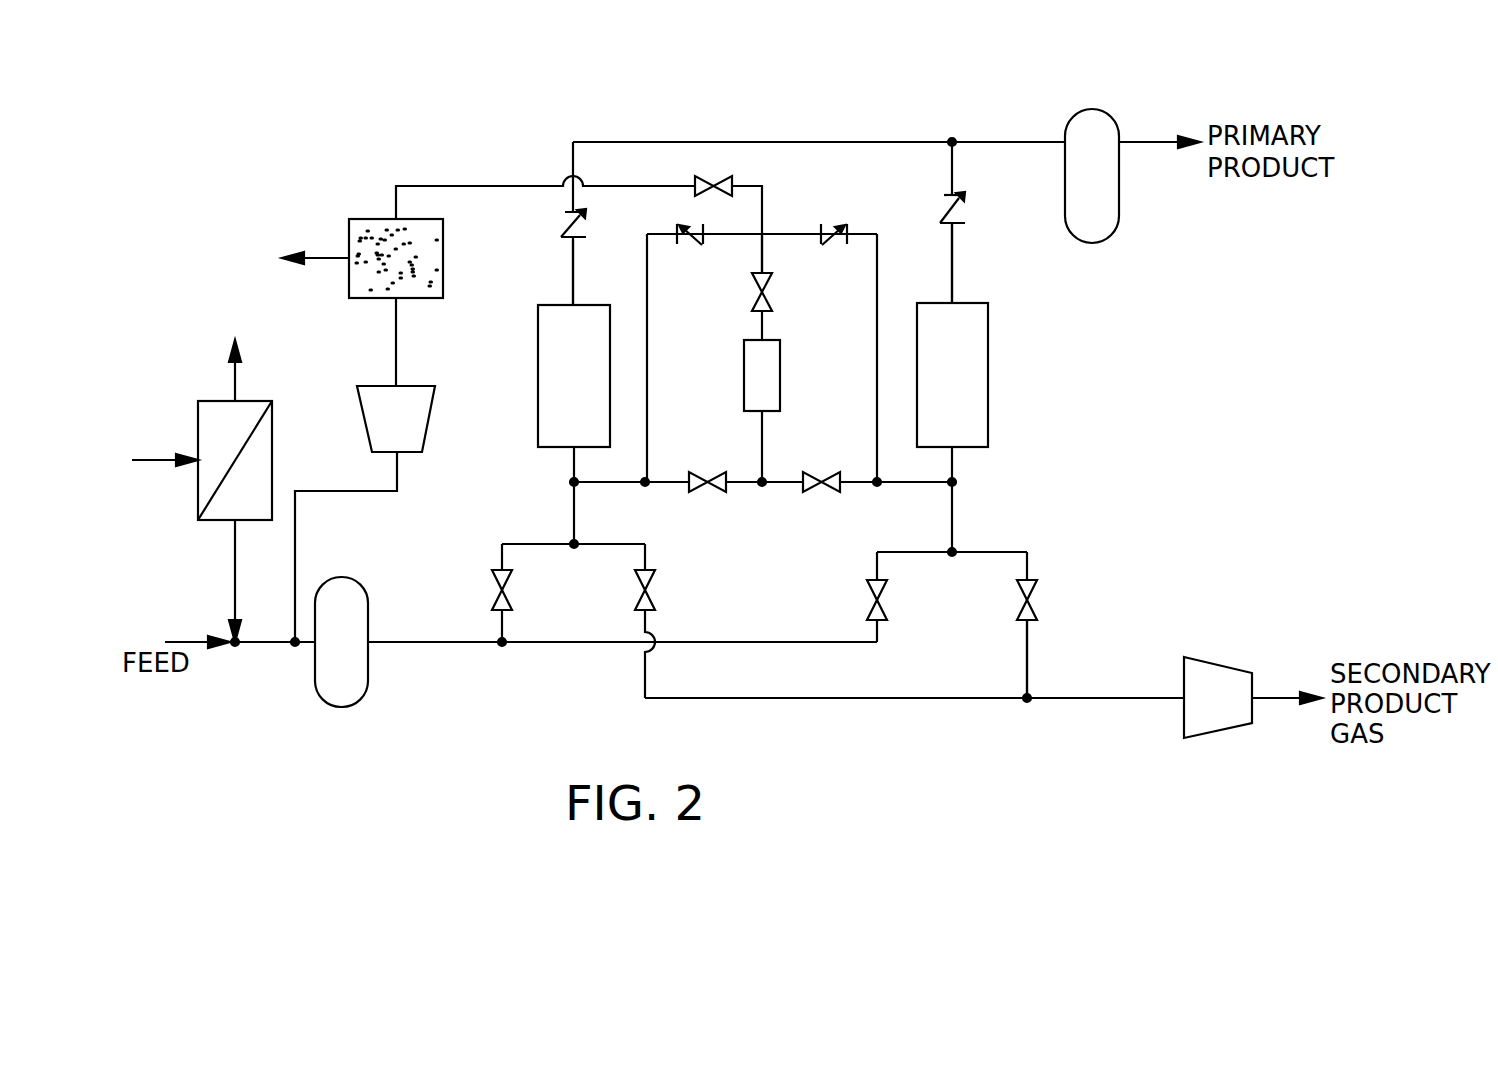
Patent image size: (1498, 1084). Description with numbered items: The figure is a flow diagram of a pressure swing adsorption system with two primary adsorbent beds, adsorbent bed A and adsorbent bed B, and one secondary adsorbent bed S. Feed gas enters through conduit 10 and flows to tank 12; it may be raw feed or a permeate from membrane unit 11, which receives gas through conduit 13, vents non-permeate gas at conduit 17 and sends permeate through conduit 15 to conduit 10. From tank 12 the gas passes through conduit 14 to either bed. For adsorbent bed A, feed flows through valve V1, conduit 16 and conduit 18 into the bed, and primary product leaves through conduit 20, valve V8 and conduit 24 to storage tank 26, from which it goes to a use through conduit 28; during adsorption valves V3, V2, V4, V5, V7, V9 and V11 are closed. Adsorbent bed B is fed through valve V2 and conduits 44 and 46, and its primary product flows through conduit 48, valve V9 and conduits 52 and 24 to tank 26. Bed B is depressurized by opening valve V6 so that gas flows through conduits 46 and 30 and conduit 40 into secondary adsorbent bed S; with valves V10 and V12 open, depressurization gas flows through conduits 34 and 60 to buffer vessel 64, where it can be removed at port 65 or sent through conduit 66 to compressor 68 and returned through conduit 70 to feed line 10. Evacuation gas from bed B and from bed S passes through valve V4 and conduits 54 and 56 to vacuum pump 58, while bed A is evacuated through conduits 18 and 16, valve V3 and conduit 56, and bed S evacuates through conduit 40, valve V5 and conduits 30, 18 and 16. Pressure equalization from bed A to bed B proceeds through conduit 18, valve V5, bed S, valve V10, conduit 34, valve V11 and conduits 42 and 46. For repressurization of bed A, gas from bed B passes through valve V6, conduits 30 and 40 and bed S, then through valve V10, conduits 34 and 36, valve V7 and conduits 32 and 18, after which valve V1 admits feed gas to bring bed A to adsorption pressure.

The conduit 10 is at (265, 648).
The membrane unit 11 is at (203, 432).
The tank 12 is at (368, 676).
The conduit 13 is at (153, 463).
The conduit 14 is at (585, 645).
The conduit 15 is at (235, 562).
The conduit 16 is at (540, 545).
The conduit 17 is at (235, 383).
The conduit 18 is at (573, 505).
The conduit 20 is at (573, 261).
The conduit 24 is at (750, 142).
The storage tank 26 is at (1119, 125).
The conduit 28 is at (1155, 142).
The conduit 30 is at (740, 482).
The conduit 32 is at (647, 372).
The conduit 34 is at (762, 250).
The conduit 36 is at (778, 233).
The conduit 40 is at (763, 441).
The conduit 42 is at (877, 283).
The conduit 44 is at (992, 550).
The conduit 46 is at (952, 507).
The conduit 48 is at (952, 280).
The conduit 52 is at (952, 165).
The conduit 54 is at (1027, 658).
The conduit 56 is at (965, 700).
The vacuum pump 58 is at (1222, 728).
The conduit 60 is at (525, 183).
The buffer vessel 64 is at (372, 219).
The port 65 is at (320, 255).
The conduit 66 is at (397, 345).
The compressor 68 is at (435, 420).
The conduit 70 is at (350, 489).
The valve V1 is at (485, 593).
The valve V2 is at (859, 597).
The valve V3 is at (629, 621).
The valve V4 is at (1010, 625).
The valve V5 is at (707, 470).
The valve V6 is at (821, 470).
The valve V7 is at (690, 249).
The valve V8 is at (555, 223).
The valve V9 is at (972, 247).
The valve V10 is at (788, 292).
The valve V11 is at (838, 217).
The valve V12 is at (713, 170).
The adsorbent bed A is at (574, 376).
The adsorbent bed B is at (952, 375).
The secondary adsorbent bed S is at (780, 378).